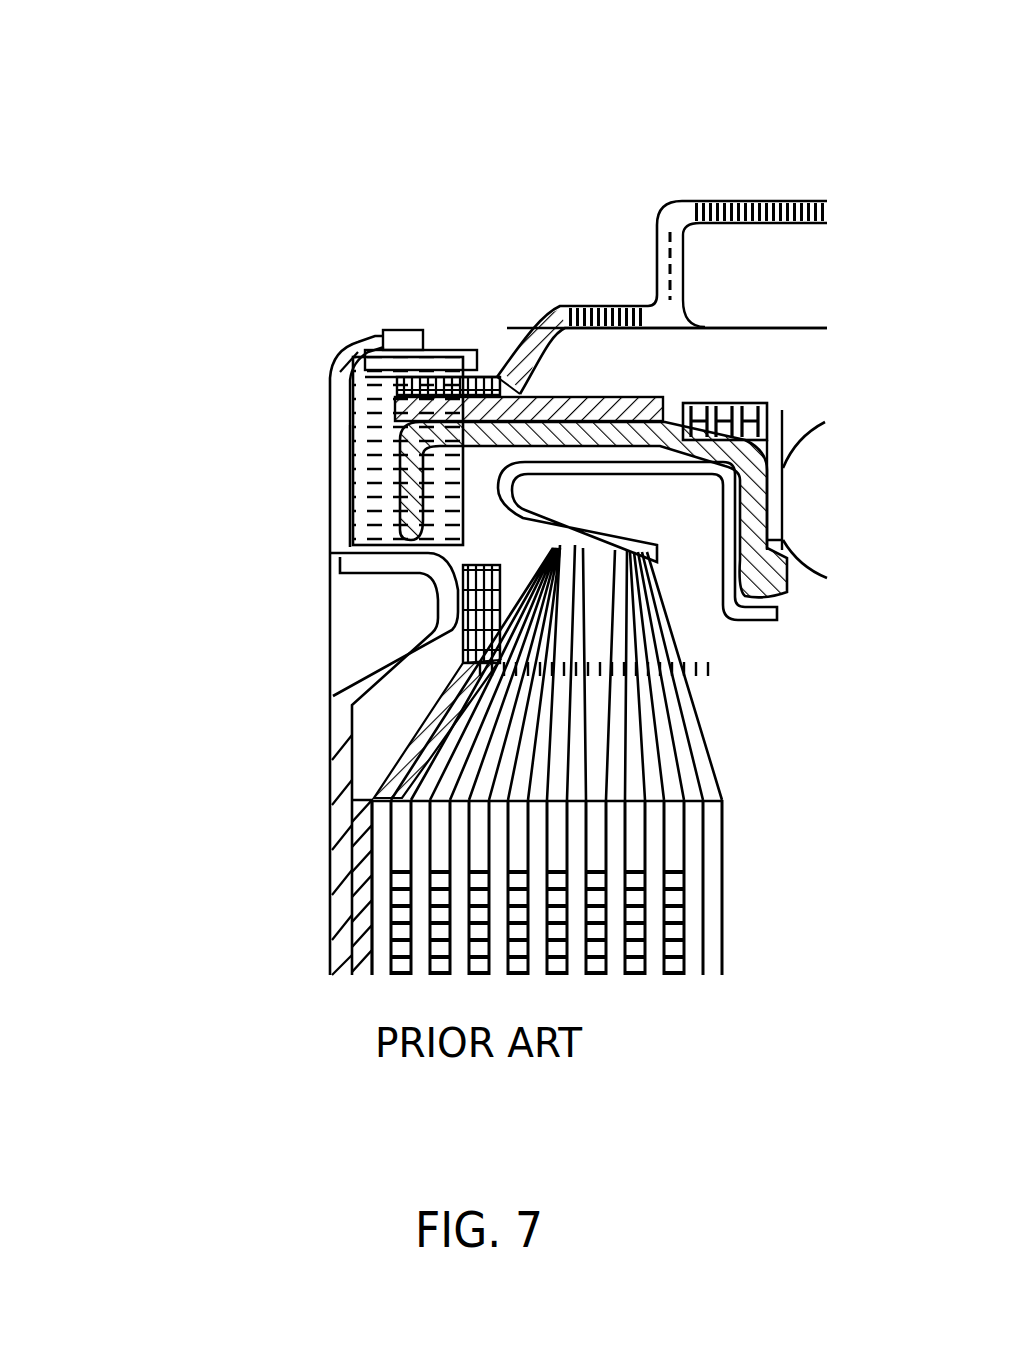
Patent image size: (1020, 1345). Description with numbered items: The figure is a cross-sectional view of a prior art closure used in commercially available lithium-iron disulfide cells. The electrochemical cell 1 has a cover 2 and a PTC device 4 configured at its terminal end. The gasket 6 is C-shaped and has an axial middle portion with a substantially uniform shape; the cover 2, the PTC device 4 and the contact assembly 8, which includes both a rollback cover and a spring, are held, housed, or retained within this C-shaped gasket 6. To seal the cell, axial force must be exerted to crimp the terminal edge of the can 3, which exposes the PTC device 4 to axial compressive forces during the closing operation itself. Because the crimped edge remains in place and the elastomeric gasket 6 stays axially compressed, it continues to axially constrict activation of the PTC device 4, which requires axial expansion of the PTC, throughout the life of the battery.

The electrochemical cell 1 is at (272, 441).
The cover 2 is at (657, 287).
The can 3 is at (410, 340).
The PTC device 4 is at (383, 332).
The gasket 6 is at (337, 558).
The contact assembly 8 is at (497, 447).